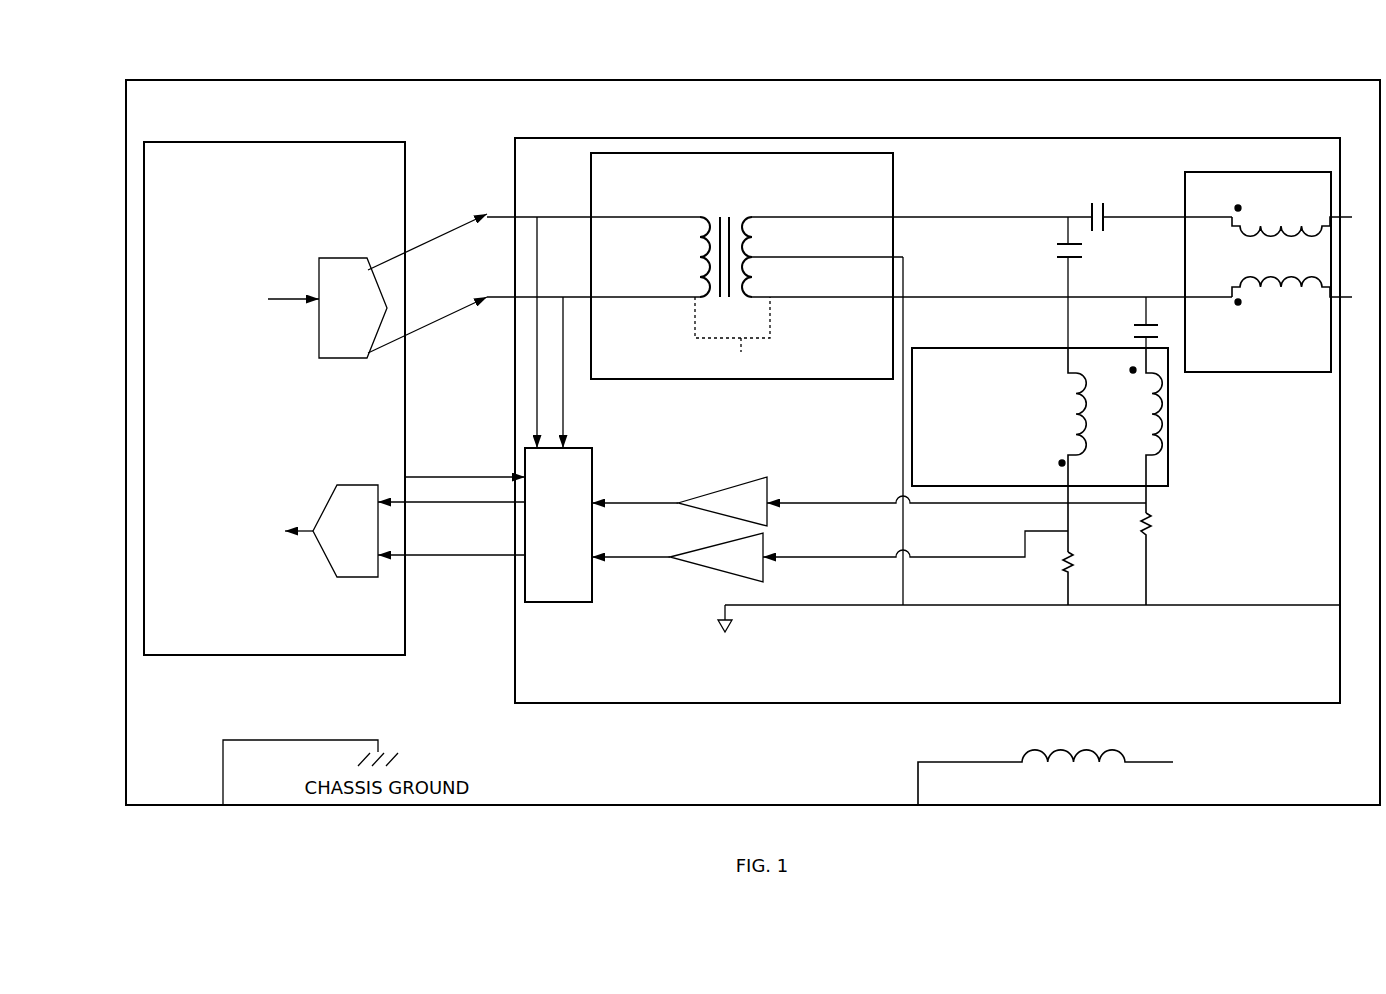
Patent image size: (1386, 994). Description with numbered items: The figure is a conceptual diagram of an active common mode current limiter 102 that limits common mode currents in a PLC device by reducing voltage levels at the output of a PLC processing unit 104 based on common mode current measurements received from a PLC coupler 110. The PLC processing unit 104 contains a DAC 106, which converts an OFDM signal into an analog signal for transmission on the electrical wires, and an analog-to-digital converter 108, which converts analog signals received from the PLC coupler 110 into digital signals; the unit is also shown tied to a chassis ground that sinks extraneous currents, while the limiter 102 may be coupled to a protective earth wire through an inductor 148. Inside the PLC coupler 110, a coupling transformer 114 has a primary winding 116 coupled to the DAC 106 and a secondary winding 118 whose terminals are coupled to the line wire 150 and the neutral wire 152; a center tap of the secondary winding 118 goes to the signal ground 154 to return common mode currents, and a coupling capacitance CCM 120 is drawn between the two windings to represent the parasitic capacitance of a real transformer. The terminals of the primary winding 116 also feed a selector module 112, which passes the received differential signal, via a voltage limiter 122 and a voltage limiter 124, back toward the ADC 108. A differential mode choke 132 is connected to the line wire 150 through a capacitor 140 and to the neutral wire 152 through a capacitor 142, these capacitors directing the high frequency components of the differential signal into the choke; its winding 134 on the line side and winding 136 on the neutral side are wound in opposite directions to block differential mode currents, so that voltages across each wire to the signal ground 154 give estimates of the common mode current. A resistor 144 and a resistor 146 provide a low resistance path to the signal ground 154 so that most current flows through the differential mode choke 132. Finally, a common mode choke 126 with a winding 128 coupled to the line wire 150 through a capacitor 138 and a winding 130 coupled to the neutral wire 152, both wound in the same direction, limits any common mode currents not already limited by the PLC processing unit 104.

The active common mode current limiter 102 is at (301, 78).
The PLC processing unit 104 is at (343, 142).
The DAC 106 is at (309, 356).
The analog-to-digital converter (ADC) 108 is at (326, 582).
The PLC coupler 110 is at (796, 706).
The selector module 112 is at (553, 605).
The coupling transformer 114 is at (900, 160).
The primary winding 116 is at (695, 242).
The secondary winding 118 is at (762, 245).
The coupling capacitance CCM 120 is at (740, 352).
The voltage limiter 122 is at (770, 483).
The voltage limiter 124 is at (765, 540).
The common mode choke 126 is at (1263, 375).
The winding 128 is at (1279, 220).
The winding 130 is at (1279, 286).
The differential mode choke 132 is at (1172, 475).
The winding 134 is at (1066, 394).
The winding 136 is at (1146, 415).
The capacitor 138 is at (1094, 202).
The capacitor 140 is at (1058, 258).
The capacitor 142 is at (1138, 332).
The resistor 144 is at (1155, 530).
The resistor 146 is at (1075, 570).
The inductor 148 is at (1074, 762).
The line wire 150 is at (1010, 216).
The neutral wire 152 is at (1024, 300).
The signal ground 154 is at (960, 610).